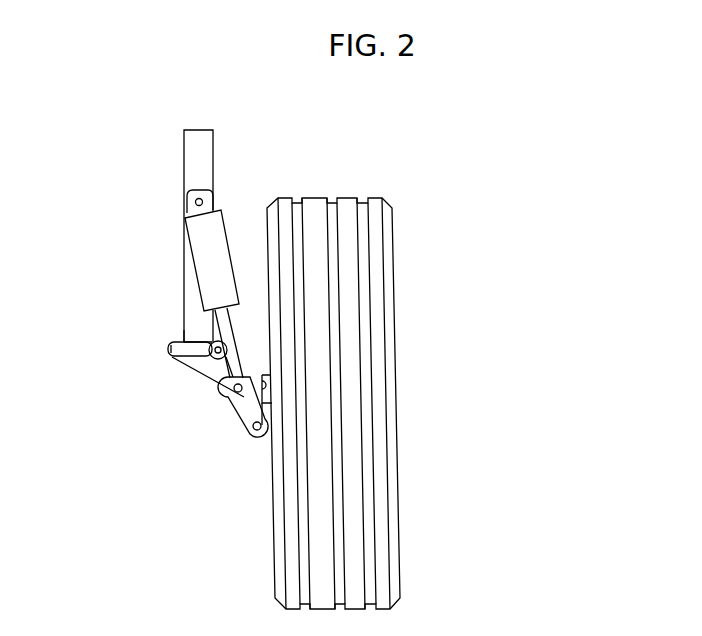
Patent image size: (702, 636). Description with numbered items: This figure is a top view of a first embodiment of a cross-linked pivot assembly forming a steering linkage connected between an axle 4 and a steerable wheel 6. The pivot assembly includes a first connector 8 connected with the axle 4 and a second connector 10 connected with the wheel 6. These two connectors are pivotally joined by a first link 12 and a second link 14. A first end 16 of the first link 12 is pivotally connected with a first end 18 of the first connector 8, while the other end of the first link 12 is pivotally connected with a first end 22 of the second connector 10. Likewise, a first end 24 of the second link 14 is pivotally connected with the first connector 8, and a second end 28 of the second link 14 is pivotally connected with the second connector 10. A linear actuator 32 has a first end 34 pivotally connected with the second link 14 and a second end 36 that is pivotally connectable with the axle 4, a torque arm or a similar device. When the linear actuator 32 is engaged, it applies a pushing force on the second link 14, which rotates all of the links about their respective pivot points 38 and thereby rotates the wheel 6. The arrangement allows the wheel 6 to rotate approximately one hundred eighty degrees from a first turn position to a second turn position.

The axle 4 is at (193, 167).
The steerable wheel 6 is at (393, 206).
The first connector 8 is at (178, 331).
The second connector 10 is at (272, 397).
The first link 12 is at (203, 362).
The second link 14 is at (238, 415).
The first end of the first link 16 is at (169, 345).
The first end of the first connector 18 is at (166, 352).
The first end of the second connector 22 is at (262, 383).
The first end of the second link 24 is at (212, 343).
The second end of the second link 28 is at (263, 425).
The linear actuator 32 is at (221, 226).
The first end of the linear actuator 34 is at (248, 380).
The second end of the linear actuator 36 is at (206, 196).
The pivot points 38 is at (256, 436).